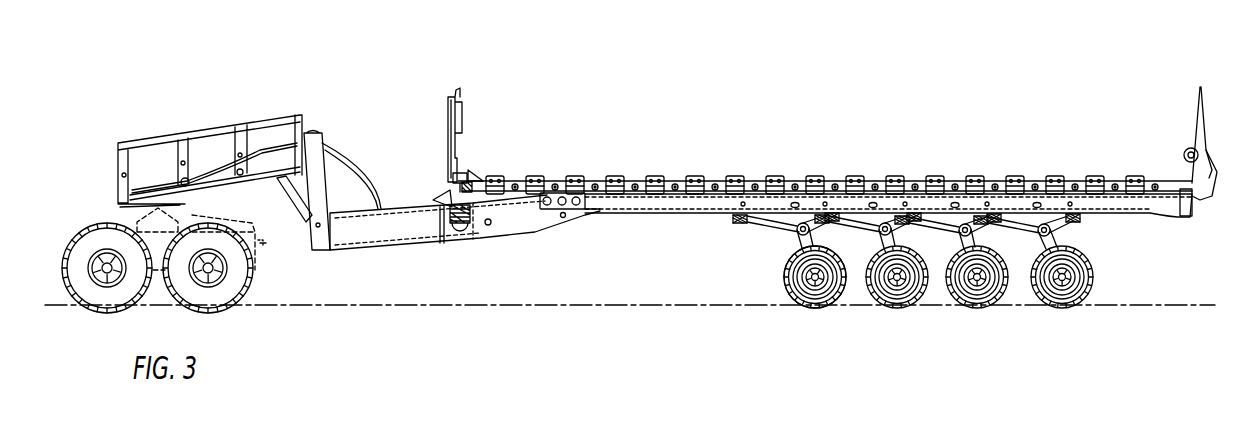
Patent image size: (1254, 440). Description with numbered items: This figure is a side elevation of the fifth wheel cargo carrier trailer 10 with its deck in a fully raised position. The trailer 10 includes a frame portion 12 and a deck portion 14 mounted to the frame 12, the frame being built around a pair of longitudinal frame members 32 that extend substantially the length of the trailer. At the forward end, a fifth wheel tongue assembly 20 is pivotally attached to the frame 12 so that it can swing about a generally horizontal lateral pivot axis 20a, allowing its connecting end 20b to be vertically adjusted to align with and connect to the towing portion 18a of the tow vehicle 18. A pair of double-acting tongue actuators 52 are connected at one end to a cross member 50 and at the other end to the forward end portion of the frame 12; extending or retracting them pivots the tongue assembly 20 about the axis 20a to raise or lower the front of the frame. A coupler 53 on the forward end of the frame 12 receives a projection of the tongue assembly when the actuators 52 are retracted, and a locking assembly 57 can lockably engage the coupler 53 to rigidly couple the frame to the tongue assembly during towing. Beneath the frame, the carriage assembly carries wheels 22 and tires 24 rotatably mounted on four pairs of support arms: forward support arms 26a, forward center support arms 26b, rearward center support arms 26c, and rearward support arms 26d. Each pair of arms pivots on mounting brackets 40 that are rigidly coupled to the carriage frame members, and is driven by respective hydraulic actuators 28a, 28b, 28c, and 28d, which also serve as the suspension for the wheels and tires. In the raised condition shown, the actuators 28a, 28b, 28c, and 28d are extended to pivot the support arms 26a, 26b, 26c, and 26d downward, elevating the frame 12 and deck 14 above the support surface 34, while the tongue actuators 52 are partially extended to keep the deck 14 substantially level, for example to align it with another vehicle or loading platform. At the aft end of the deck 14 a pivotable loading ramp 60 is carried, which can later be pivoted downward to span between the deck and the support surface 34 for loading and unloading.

The fifth wheel cargo carrier trailer 10 is at (952, 97).
The frame portion 12 is at (640, 200).
The deck portion 14 is at (840, 141).
The tow vehicle 18 is at (283, 280).
The towing portion 18a is at (202, 207).
The fifth wheel tongue assembly 20 is at (357, 124).
The lateral pivot axis 20a is at (565, 214).
The connecting end 20b is at (187, 115).
The wheels 22 is at (812, 286).
The tires 24 is at (840, 301).
The forward support arms 26a is at (800, 240).
The forward center support arms 26b is at (873, 238).
The rearward center support arms 26c is at (950, 238).
The rearward support arms 26d is at (1030, 238).
The forward support arm actuators 28a is at (775, 221).
The forward center support arm actuators 28b is at (848, 220).
The rearward center support arm actuators 28c is at (936, 221).
The rearward support arm actuators 28d is at (1018, 221).
The longitudinal frame members 32 is at (682, 205).
The support surface 34 is at (515, 304).
The mounting brackets 40 is at (803, 222).
The cross member 50 is at (437, 234).
The tongue actuators 52 is at (437, 198).
The coupler 53 is at (450, 183).
The locking assembly 57 is at (477, 231).
The pivotable loading ramp 60 is at (1193, 134).